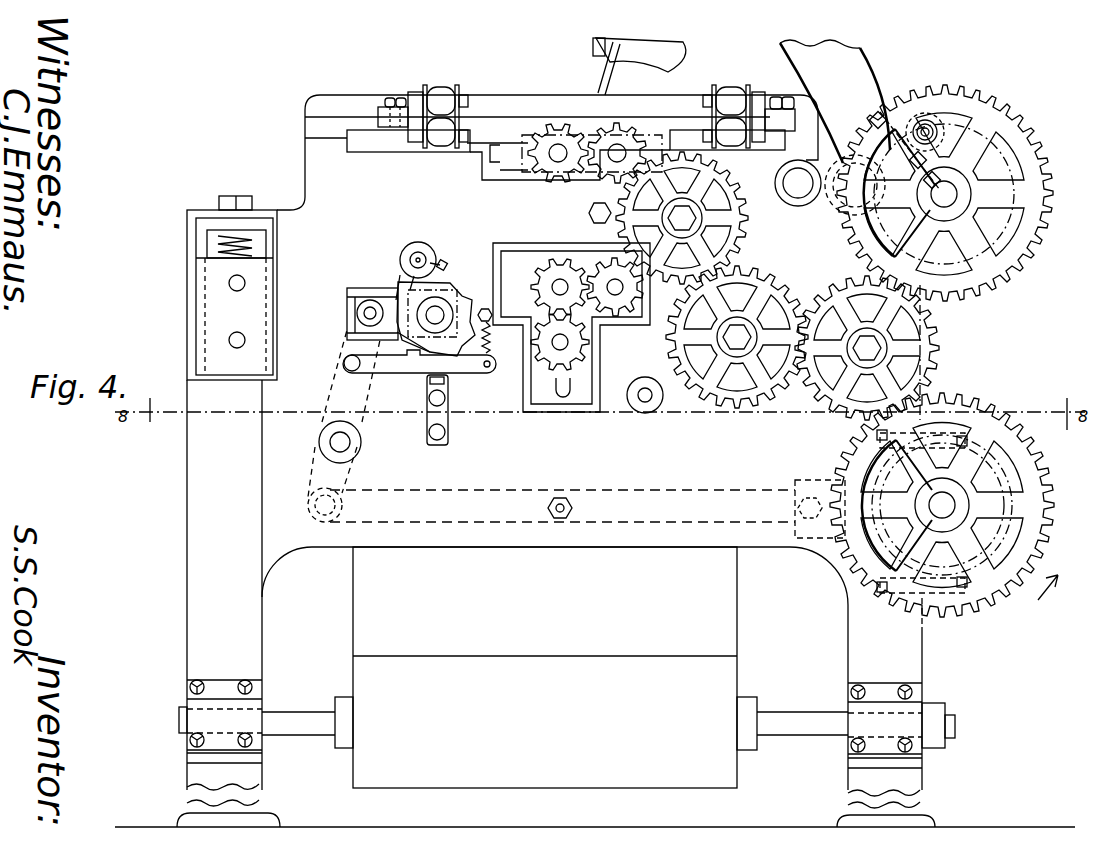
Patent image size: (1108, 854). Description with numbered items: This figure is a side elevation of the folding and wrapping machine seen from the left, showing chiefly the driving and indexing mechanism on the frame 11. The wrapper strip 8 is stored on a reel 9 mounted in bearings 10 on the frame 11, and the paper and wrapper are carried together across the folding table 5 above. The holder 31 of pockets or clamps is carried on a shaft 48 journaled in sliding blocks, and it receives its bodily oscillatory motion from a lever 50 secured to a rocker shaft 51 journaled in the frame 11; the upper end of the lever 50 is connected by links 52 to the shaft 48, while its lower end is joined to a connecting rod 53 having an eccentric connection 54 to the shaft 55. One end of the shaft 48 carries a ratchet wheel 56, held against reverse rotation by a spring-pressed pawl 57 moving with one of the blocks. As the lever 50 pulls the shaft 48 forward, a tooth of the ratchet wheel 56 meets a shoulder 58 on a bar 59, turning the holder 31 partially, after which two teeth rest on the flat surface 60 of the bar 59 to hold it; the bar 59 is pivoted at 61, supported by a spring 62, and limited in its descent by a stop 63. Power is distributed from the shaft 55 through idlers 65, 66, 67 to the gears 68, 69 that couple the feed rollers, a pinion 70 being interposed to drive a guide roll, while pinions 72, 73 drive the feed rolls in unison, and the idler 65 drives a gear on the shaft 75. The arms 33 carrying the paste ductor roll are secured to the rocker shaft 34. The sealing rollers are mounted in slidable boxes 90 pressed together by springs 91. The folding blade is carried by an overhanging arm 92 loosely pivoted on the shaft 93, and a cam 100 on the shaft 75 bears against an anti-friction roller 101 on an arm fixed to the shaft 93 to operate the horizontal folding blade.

The folding table 5 is at (330, 137).
The strip 8 is at (710, 627).
The reel 9 is at (790, 725).
The bearings 10 is at (922, 712).
The frame 11 is at (475, 548).
The holder 31 is at (347, 320).
The arms 33 is at (577, 390).
The rocker shaft 34 is at (647, 397).
The shaft 48 is at (443, 282).
The lever 50 is at (318, 424).
The rocker shaft 51 is at (350, 442).
The links 52 is at (392, 302).
The connecting rod 53 is at (637, 492).
The eccentric connection 54 is at (840, 450).
The shaft 55 is at (947, 502).
The ratchet wheel 56 is at (458, 285).
The pawl 57 is at (410, 250).
The shoulder 58 is at (400, 373).
The bar 59 is at (465, 367).
The flat surface 60 is at (365, 343).
The pivot 61 is at (344, 362).
The spring 62 is at (495, 365).
The stop 63 is at (447, 392).
The idler 65 is at (937, 352).
The idler 66 is at (773, 275).
The idler 67 is at (760, 217).
The gear 68 is at (550, 258).
The gear 69 is at (593, 348).
The pinion 70 is at (643, 318).
The pinion 72 is at (559, 128).
The pinion 73 is at (625, 122).
The shaft 75 is at (945, 180).
The slidable boxes 90 is at (200, 270).
The springs 91 is at (216, 228).
The overhanging arm 92 is at (830, 65).
The shaft 93 is at (880, 193).
The cam 100 is at (977, 177).
The anti-friction roller 101 is at (927, 120).